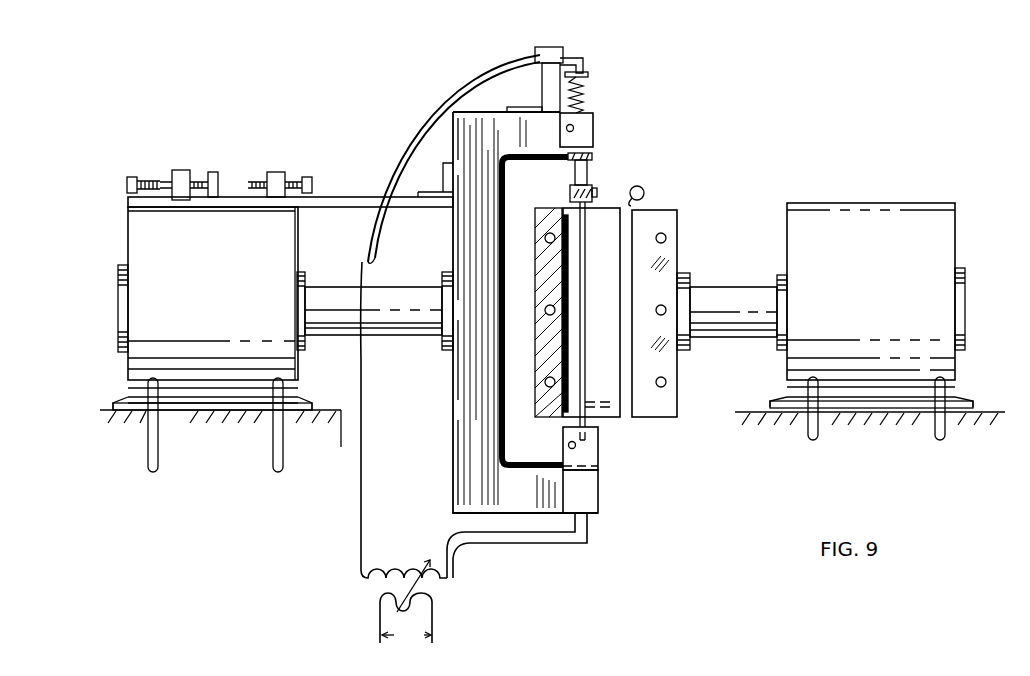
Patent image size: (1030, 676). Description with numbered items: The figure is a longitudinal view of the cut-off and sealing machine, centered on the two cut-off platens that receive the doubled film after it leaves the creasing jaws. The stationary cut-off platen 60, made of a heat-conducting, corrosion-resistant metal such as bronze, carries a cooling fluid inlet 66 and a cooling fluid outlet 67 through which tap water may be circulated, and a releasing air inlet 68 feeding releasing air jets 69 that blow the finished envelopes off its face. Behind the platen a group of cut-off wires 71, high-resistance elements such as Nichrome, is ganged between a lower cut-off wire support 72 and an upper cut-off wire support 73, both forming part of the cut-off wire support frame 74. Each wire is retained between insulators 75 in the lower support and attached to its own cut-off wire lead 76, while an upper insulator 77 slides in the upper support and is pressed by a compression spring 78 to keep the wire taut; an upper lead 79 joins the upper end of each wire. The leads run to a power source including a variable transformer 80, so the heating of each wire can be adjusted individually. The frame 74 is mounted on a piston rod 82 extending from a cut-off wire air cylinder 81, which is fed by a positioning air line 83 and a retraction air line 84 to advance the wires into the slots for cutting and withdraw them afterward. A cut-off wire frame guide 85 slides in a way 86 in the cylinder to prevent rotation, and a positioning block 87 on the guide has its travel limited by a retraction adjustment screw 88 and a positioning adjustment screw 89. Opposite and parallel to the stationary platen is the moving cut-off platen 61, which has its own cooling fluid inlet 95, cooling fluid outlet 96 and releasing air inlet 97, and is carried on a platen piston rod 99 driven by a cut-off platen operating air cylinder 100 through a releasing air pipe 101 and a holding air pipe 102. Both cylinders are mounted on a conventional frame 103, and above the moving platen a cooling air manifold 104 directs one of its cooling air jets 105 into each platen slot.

The stationary cut-off platen 60 is at (563, 295).
The moving cut-off platen 61 is at (680, 301).
The cooling fluid inlet 66 is at (546, 380).
The cooling fluid outlet 67 is at (546, 236).
The releasing air inlet 68 is at (546, 310).
The releasing air jets 69 is at (560, 313).
The cut-off wires 71 is at (588, 420).
The lower cut-off wire support 72 is at (600, 500).
The upper cut-off wire support 73 is at (595, 131).
The cut-off wire support frame 74 is at (455, 483).
The insulators 75 is at (600, 455).
The cut-off wire lead 76 is at (527, 543).
The upper insulator 77 is at (597, 159).
The spring 78 is at (590, 104).
The upper lead 79 is at (500, 62).
The variable transformer 80 is at (446, 592).
The cut-off wire air cylinder 81 is at (127, 211).
The piston rod 82 is at (313, 287).
The positioning air line 83 is at (160, 450).
The retraction air line 84 is at (284, 447).
The cut-off wire frame guide 85 is at (350, 197).
The way 86 is at (126, 192).
The positioning block 87 is at (217, 171).
The retraction adjustment screw 88 is at (150, 173).
The positioning adjustment screw 89 is at (300, 173).
The cooling fluid inlet 95 is at (667, 382).
The cooling fluid outlet 96 is at (667, 236).
The releasing air inlet 97 is at (686, 283).
The platen piston rod 99 is at (736, 287).
The cut-off platen operating air cylinder 100 is at (905, 200).
The releasing air pipe 101 is at (819, 434).
The holding air pipe 102 is at (946, 430).
The frame 103 is at (97, 410).
The cooling air manifold 104 is at (643, 189).
The cooling air jets 105 is at (668, 208).